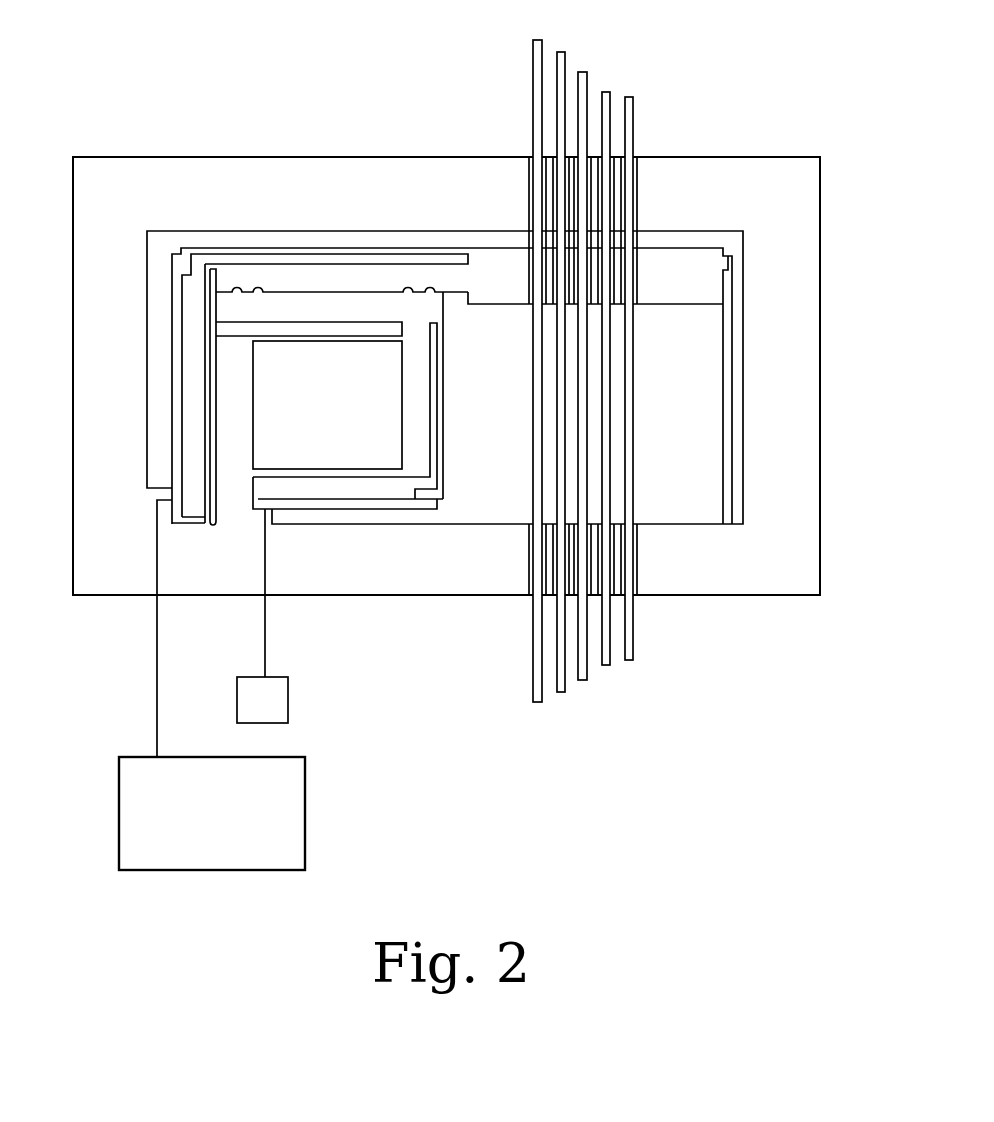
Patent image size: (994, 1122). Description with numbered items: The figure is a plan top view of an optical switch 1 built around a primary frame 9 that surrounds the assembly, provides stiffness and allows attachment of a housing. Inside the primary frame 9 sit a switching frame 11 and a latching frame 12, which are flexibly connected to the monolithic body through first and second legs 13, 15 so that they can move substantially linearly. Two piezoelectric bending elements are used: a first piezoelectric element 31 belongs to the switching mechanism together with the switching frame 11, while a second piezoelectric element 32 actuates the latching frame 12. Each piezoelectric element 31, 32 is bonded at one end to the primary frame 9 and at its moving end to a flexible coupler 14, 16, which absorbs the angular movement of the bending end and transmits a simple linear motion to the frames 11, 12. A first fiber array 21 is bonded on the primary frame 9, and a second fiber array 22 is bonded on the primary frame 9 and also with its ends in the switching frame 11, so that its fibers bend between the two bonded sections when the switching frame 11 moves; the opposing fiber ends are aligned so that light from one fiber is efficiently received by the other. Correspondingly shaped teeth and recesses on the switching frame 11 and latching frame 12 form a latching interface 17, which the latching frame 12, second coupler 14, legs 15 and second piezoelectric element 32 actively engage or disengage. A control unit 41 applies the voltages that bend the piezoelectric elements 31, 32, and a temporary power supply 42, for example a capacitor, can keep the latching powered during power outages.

The optical switch 1 is at (757, 676).
The primary frame 9 is at (120, 560).
The switching frame 11 is at (337, 275).
The latching frame 12 is at (379, 307).
The first legs 13 is at (203, 372).
The second coupler 14 is at (208, 247).
The second legs 15 is at (307, 469).
The coupler 16 is at (440, 410).
The latching interface 17 is at (258, 288).
The first fiber array 21 is at (633, 97).
The second fiber array 22 is at (633, 660).
The first piezoelectric element 31 is at (183, 333).
The second piezoelectric element 32 is at (383, 505).
The control unit 41 is at (305, 788).
The temporary power supply 42 is at (288, 698).